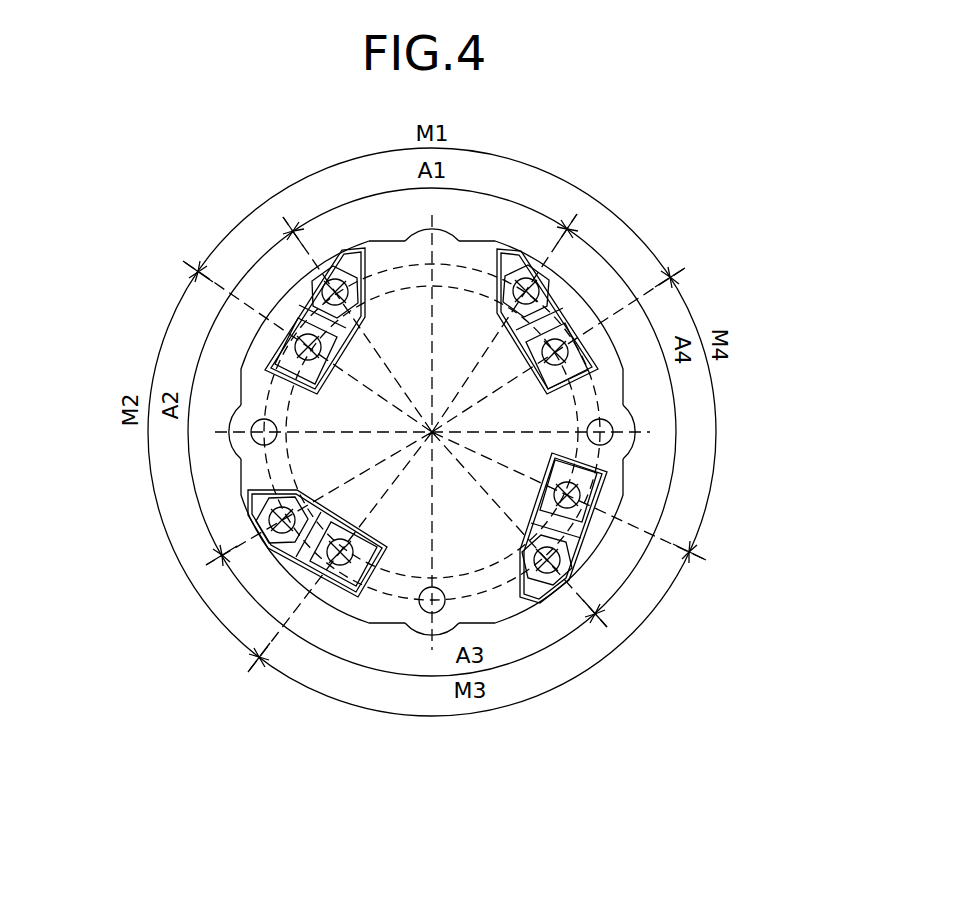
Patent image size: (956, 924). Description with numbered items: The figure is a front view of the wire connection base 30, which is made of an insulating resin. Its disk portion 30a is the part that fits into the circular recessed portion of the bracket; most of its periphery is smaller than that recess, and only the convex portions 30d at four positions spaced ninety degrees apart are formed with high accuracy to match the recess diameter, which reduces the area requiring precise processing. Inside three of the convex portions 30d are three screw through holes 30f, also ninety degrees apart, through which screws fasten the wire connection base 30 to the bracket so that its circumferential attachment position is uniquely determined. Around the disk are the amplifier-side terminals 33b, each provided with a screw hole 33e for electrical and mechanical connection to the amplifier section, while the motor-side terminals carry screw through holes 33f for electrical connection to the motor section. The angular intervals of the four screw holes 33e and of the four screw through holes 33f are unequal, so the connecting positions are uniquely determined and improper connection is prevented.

The wire connection base 30 is at (590, 302).
The disk portion 30a is at (413, 297).
The convex portions 30d is at (251, 436).
The screw through holes 30f is at (240, 463).
The amplifier-side terminal 33b is at (342, 256).
The screw hole 33e is at (340, 272).
The screw through hole 33f is at (300, 342).